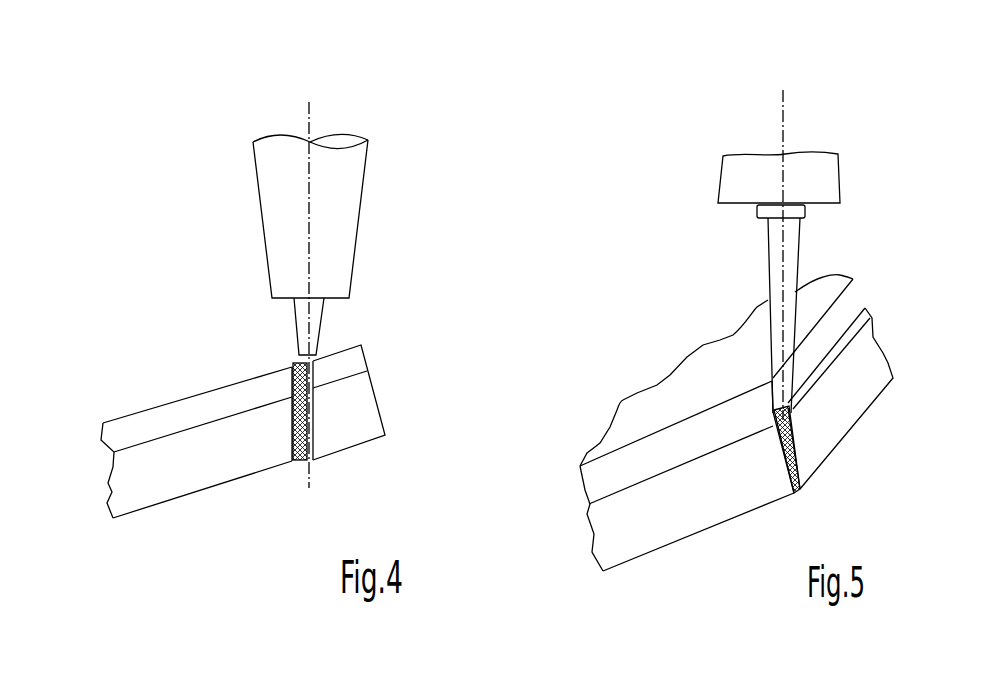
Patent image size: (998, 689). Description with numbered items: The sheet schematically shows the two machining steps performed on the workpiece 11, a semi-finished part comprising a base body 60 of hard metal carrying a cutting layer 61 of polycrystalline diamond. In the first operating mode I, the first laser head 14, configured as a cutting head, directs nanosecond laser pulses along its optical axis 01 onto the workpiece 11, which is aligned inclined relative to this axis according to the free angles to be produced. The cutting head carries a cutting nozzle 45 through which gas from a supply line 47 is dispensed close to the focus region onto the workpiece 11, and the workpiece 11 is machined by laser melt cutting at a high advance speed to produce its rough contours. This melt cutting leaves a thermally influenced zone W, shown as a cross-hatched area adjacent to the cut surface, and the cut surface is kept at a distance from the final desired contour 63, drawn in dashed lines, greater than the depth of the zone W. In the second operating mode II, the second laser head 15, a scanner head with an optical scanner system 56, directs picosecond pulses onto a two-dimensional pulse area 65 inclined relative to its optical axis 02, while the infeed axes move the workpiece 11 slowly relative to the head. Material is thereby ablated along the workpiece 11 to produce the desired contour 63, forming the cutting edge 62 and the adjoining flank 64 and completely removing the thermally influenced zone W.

In FIG. 4, the optical axis 01 is at (308, 120).
In FIG. 5, the optical axis 02 is at (782, 137).
In FIG. 4, the first laser head 14 is at (371, 218).
In FIG. 5, the second laser head 15 is at (785, 233).
In FIG. 4, the first operating mode I is at (453, 202).
In FIG. 5, the second operating mode II is at (930, 222).
In FIG. 4, the cutting nozzle 45 is at (323, 320).
In FIG. 5, the supply line 47 is at (757, 207).
In FIG. 4, the workpiece 11 is at (209, 451).
In FIG. 5, the workpiece 11 is at (742, 420).
In FIG. 4, the base body 60 is at (145, 487).
In FIG. 5, the base body 60 is at (668, 523).
In FIG. 4, the cutting layer 61 is at (128, 432).
In FIG. 5, the cutting layer 61 is at (600, 483).
In FIG. 4, the cutting edge 62 is at (291, 365).
In FIG. 5, the cutting edge 62 is at (822, 315).
In FIG. 4, the desired contour 63 is at (292, 436).
In FIG. 5, the desired contour 63 is at (773, 477).
In FIG. 5, the flank 64 is at (845, 305).
In FIG. 5, the pulse area 65 is at (790, 408).
In FIG. 4, the optical scanner system 56 is at (313, 462).
In FIG. 5, the optical scanner system 56 is at (877, 376).
In FIG. 4, the thermally influenced zone W is at (300, 467).
In FIG. 5, the thermally influenced zone W is at (795, 472).